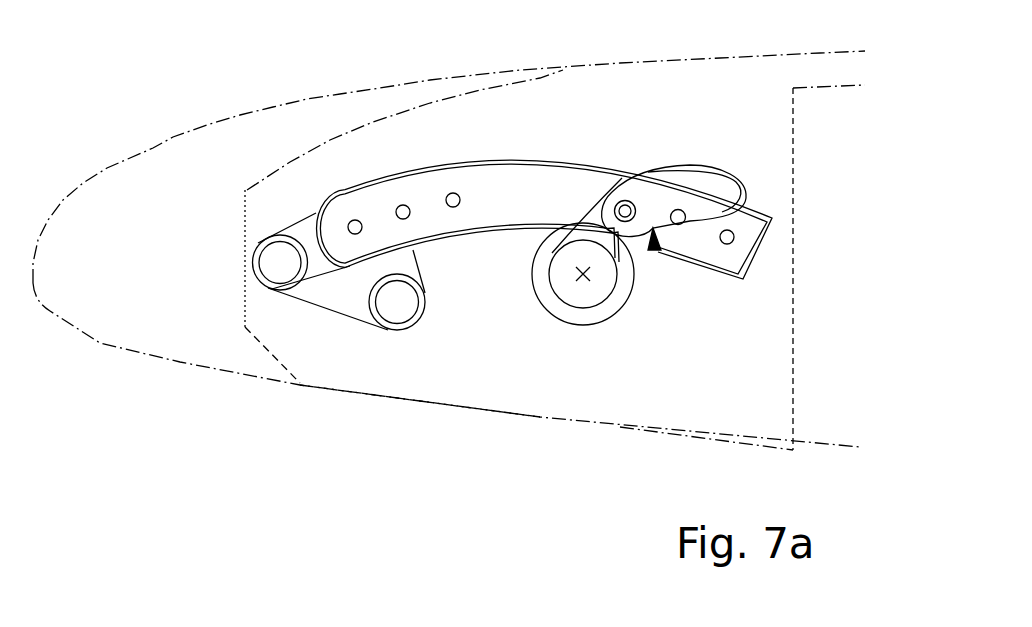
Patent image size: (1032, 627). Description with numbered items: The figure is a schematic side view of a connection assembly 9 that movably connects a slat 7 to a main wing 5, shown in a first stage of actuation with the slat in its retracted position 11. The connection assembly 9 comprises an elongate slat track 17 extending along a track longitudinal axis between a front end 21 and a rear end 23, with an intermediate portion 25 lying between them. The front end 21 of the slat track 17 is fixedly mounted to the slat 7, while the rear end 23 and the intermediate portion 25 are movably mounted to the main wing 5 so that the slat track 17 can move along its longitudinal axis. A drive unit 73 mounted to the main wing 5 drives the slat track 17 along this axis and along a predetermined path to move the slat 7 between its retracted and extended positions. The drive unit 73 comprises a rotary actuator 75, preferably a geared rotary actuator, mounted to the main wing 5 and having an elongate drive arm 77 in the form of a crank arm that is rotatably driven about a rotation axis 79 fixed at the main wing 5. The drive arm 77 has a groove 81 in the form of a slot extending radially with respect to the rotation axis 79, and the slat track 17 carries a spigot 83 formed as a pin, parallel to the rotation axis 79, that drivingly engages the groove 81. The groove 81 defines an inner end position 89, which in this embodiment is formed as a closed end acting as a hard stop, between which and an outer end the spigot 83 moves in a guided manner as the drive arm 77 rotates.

The retracted position 11 is at (116, 97).
The slat 7 is at (139, 266).
The main wing 5 is at (726, 410).
The connection assembly 9 is at (368, 381).
The drive unit 73 is at (527, 381).
The slat track 17 is at (468, 198).
The intermediate portion 25 is at (487, 207).
The front end 21 is at (312, 228).
The rear end 23 is at (747, 240).
The groove 81 is at (654, 174).
The drive arm 77 is at (717, 168).
The spigot 83 is at (626, 203).
The inner end position 89 is at (657, 251).
The rotary actuator 75 is at (627, 303).
The rotation axis 79 is at (583, 280).